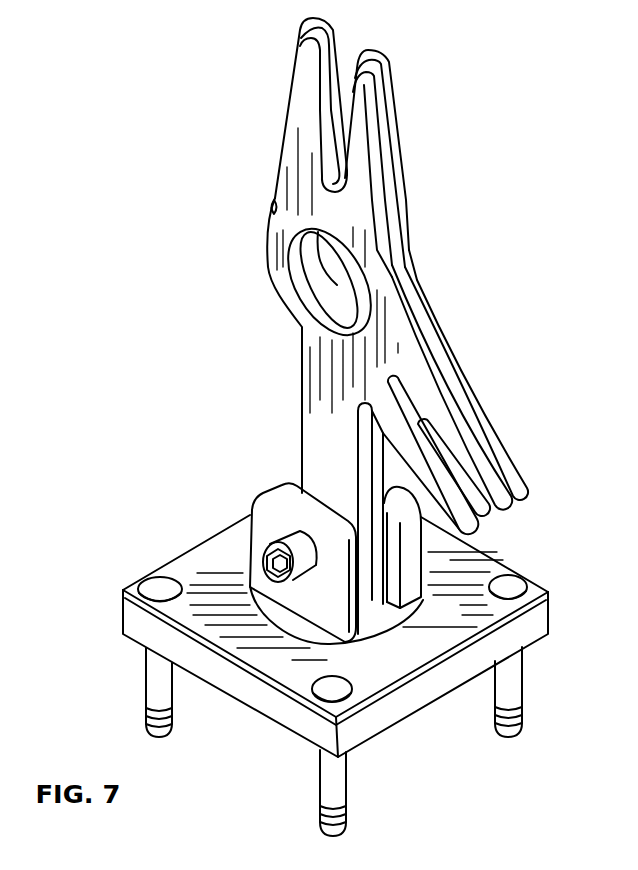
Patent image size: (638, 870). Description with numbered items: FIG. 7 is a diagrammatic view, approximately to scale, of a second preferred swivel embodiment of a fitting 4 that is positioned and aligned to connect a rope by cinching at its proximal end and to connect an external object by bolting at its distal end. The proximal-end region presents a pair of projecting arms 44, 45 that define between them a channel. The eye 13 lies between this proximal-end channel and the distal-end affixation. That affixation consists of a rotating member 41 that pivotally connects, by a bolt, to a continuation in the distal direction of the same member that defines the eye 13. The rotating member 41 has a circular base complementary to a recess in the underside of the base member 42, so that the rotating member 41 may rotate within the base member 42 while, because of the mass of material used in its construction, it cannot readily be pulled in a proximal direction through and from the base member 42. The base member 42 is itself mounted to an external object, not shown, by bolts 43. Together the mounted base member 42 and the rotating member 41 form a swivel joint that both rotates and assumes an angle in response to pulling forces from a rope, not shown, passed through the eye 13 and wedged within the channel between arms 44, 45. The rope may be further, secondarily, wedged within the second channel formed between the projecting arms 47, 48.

The fitting 4 is at (243, 484).
The eye 13 is at (340, 296).
The rotating member 41 is at (412, 563).
The base member 42 is at (532, 628).
The bolts 43 is at (158, 685).
The projecting arm 44 is at (303, 105).
The projecting arm 45 is at (357, 143).
The projecting arm 47 is at (483, 521).
The projecting arm 48 is at (490, 443).